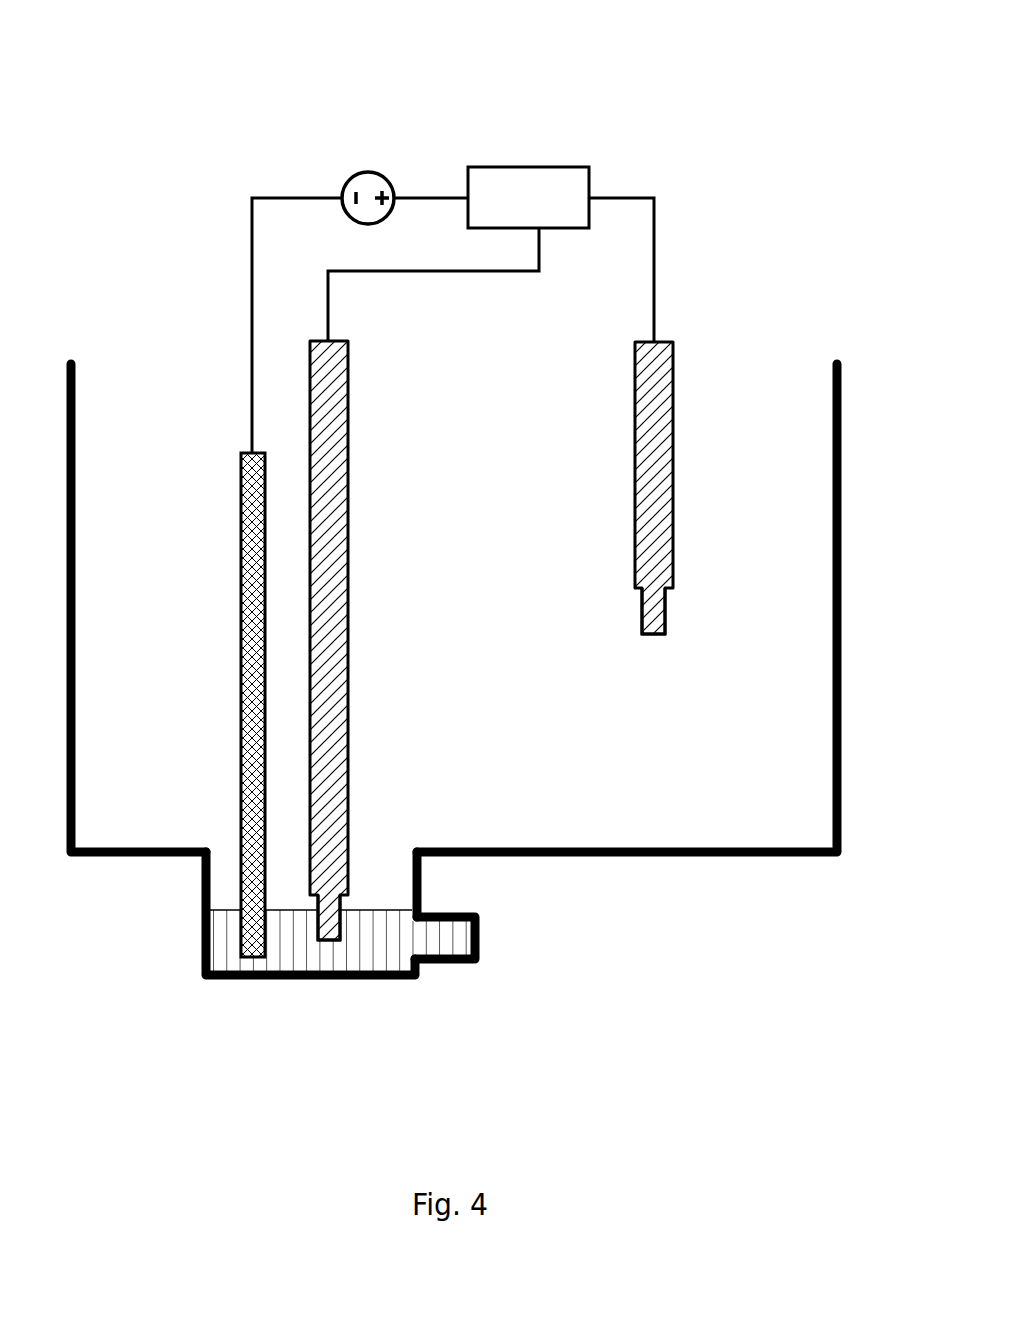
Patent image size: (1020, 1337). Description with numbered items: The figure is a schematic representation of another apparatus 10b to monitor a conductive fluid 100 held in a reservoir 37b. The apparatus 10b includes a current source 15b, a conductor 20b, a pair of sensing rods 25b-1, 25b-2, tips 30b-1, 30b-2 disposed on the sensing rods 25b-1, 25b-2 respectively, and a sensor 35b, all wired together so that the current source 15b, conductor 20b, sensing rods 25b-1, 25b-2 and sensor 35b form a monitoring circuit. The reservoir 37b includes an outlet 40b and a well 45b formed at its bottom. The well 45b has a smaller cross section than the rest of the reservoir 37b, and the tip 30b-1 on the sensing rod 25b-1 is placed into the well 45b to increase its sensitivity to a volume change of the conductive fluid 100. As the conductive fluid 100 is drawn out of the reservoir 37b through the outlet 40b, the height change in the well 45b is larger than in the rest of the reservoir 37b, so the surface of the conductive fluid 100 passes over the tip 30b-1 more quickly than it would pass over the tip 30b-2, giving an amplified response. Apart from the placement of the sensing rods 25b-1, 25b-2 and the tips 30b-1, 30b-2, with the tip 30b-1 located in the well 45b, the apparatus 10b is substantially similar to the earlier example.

The apparatus 10b is at (212, 83).
The current source 15b is at (365, 172).
The conductor 20b is at (242, 474).
The sensing rod 25b-1 is at (674, 460).
The sensing rod 25b-2 is at (348, 548).
The tip 30b-1 is at (665, 623).
The tip 30b-2 is at (327, 942).
The sensor 35b is at (550, 211).
The reservoir 37b is at (842, 458).
The outlet 40b is at (453, 965).
The well 45b is at (168, 941).
The conductive fluid 100 is at (378, 910).